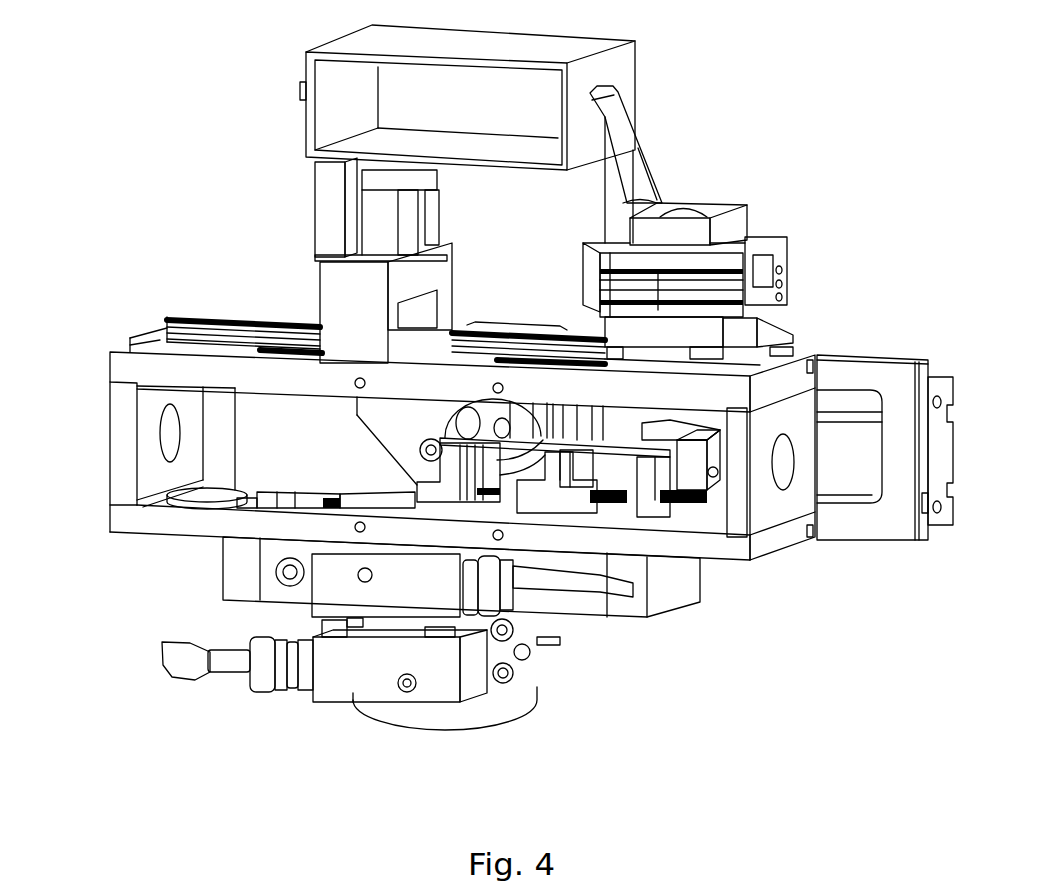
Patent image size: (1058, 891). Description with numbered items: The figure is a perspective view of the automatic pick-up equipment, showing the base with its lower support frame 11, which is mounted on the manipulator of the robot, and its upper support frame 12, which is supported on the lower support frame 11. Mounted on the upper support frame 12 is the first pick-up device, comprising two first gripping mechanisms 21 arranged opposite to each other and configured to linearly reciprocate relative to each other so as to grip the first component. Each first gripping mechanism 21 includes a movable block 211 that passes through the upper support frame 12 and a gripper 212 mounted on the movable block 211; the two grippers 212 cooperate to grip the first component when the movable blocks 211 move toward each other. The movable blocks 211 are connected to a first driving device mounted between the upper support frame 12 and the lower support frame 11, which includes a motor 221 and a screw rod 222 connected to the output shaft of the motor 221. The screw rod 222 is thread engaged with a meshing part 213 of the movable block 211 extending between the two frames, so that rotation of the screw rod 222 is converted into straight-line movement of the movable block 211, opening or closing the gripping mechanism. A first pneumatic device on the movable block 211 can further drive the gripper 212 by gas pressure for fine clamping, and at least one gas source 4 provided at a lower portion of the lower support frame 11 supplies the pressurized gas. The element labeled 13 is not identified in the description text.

The gas source 4 is at (332, 673).
The lower support frame 11 is at (723, 547).
The upper support frame 12 is at (128, 372).
The side wall 13 is at (765, 510).
The first gripping mechanism 21 is at (327, 201).
The movable block 211 is at (778, 332).
The gripper 212 is at (623, 133).
The meshing part 213 is at (692, 460).
The motor 221 is at (248, 438).
The screw rod 222 is at (598, 448).